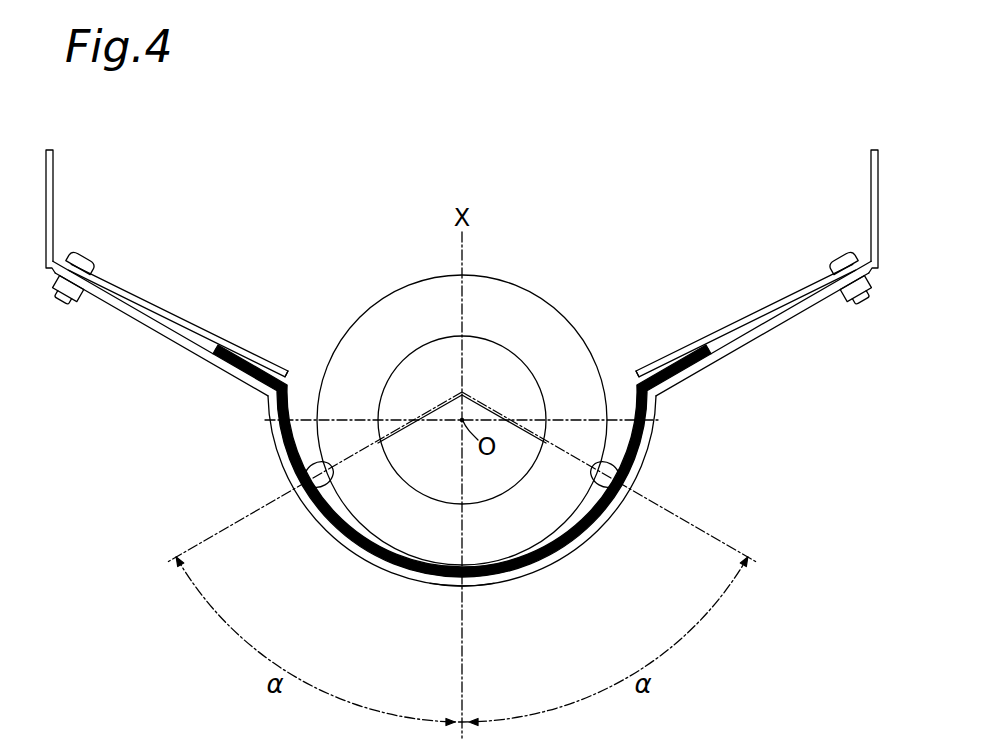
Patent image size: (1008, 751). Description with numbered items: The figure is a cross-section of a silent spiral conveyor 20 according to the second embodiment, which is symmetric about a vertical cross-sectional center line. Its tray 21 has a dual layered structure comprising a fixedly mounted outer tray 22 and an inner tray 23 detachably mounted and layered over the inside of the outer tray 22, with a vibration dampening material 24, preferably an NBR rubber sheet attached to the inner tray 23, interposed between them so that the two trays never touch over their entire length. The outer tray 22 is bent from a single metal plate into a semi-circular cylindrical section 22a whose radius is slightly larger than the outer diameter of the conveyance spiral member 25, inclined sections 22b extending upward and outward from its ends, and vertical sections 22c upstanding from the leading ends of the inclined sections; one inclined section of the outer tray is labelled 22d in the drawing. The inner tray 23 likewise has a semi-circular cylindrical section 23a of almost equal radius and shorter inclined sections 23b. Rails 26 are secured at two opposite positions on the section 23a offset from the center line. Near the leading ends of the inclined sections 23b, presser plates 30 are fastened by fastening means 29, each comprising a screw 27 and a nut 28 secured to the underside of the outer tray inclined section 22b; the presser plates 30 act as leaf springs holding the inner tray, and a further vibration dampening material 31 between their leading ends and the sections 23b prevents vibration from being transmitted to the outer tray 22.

The spiral conveyor 20 is at (212, 464).
The tray 21 is at (625, 636).
The outer tray 22 is at (462, 402).
The semi-circular cylindrical section 22a is at (373, 564).
The inclined sections 22b is at (772, 330).
The vertical sections 22c is at (53, 184).
The left arm portion of band 22d is at (152, 330).
The inner tray 23 is at (461, 459).
The semi-circular cylindrical section 23a is at (291, 412).
The inclined sections 23b is at (222, 348).
The vibration dampening material 24 is at (425, 583).
The conveyance spiral member 25 is at (513, 298).
The rails 26 is at (310, 472).
The screw 27 is at (86, 258).
The nut 28 is at (84, 303).
The fastening means 29 is at (62, 320).
The presser plates 30 is at (174, 312).
The vibration dampening material 31 is at (266, 361).